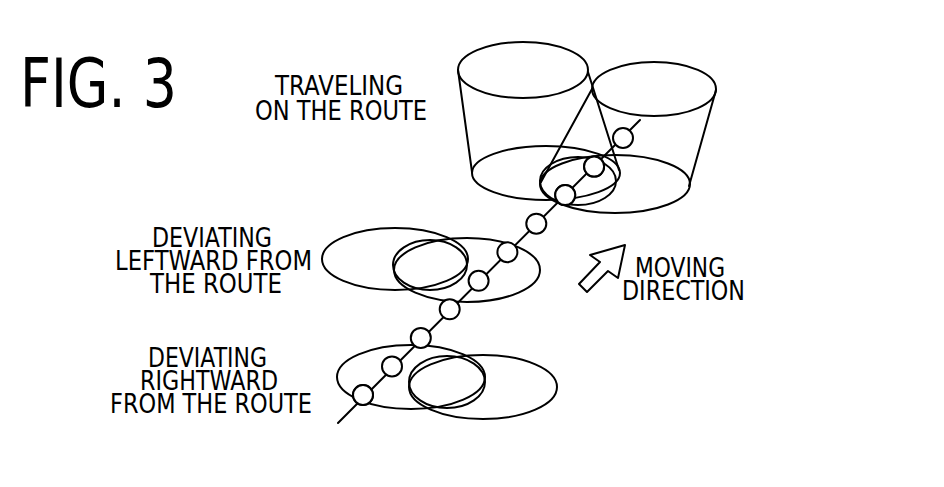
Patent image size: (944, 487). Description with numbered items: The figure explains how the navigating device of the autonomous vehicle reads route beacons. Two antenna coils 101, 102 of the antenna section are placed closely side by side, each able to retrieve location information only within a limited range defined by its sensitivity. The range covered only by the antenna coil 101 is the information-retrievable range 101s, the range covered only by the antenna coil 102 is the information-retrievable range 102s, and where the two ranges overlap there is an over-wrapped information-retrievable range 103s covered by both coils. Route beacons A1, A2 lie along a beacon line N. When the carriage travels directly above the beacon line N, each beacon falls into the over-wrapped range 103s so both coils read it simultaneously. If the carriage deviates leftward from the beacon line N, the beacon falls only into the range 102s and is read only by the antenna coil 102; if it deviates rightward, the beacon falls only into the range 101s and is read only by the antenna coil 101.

The antenna coil 101 is at (502, 58).
The antenna coil 102 is at (673, 87).
The information-retrievable range 101s is at (487, 180).
The information-retrievable range 102s is at (680, 192).
The over-wrapped information-retrievable range 103s is at (592, 186).
The route beacon A1 is at (558, 186).
The route beacon A2 is at (605, 169).
The beacon line N is at (345, 416).